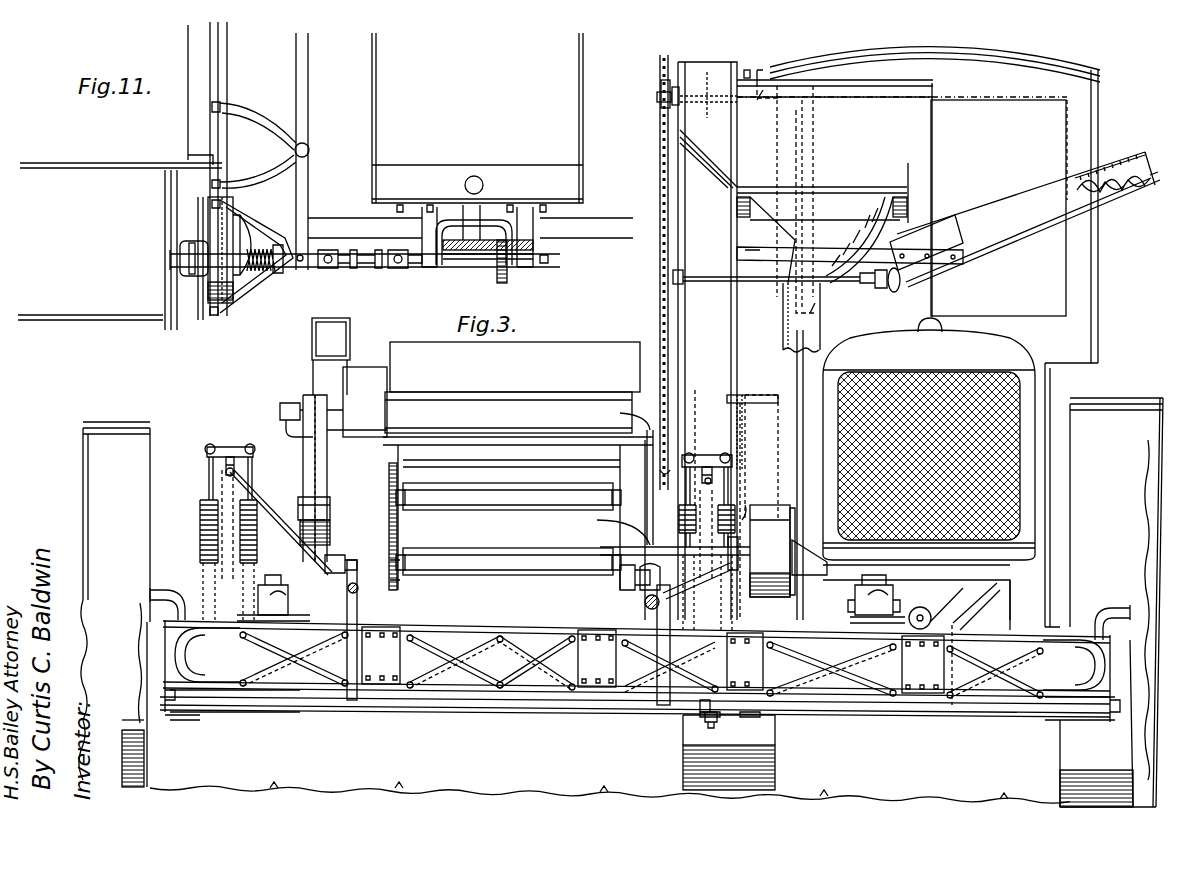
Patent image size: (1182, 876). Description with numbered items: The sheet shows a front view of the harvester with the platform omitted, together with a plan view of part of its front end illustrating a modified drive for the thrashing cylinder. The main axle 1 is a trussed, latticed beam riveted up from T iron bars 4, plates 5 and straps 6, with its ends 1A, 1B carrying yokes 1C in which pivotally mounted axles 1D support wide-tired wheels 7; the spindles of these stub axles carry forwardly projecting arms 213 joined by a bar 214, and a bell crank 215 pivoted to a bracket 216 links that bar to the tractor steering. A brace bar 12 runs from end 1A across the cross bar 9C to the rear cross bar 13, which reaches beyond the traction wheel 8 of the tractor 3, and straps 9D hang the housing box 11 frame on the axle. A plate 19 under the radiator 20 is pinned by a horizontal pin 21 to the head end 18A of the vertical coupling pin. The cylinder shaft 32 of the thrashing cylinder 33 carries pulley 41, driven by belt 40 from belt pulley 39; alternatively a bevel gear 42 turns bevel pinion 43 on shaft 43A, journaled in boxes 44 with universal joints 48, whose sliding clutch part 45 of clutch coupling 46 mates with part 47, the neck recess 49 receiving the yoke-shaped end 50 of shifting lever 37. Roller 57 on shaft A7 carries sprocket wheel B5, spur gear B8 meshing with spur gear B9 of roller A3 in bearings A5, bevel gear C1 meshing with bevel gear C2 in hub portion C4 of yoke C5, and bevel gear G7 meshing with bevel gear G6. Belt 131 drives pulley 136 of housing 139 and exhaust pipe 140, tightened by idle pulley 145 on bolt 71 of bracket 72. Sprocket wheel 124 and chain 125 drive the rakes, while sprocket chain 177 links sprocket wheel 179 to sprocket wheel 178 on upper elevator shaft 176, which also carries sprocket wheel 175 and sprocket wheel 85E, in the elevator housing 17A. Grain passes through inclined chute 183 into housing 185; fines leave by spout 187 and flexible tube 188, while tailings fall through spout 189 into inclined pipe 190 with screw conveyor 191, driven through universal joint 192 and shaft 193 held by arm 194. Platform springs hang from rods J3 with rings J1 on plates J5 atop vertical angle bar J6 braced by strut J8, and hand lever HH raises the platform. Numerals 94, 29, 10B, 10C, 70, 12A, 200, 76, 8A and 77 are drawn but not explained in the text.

In FIG. 11, the upright post 94 is at (222, 60).
In FIG. 11, the shifting lever 37 is at (306, 108).
In FIG. 11, the clutch coupling 46 is at (232, 212).
In FIG. 11, the clutch coupling part 47 is at (215, 221).
In FIG. 11, the thrashing cylinder shaft 32 is at (180, 260).
In FIG. 3, the thrashing cylinder shaft 32 is at (700, 572).
In FIG. 11, the clutch coupling part 45 is at (246, 280).
In FIG. 11, the neck recess 49 is at (302, 274).
In FIG. 11, the yoke-shaped end 50 is at (308, 230).
In FIG. 11, the universal joints 48 is at (330, 270).
In FIG. 11, the boxes 44 is at (525, 266).
In FIG. 11, the bevel gear 42 is at (470, 254).
In FIG. 11, the shaft 43A is at (443, 265).
In FIG. 11, the bevel pinion 43 is at (503, 284).
In FIG. 11, the radiator 20 is at (477, 122).
In FIG. 3, the radiator 20 is at (1032, 475).
In FIG. 11, the main axle 1 is at (608, 232).
In FIG. 3, the main axle 1 is at (520, 712).
In FIG. 3, the sprocket chain 177 is at (660, 165).
In FIG. 3, the sprocket wheel 178 is at (662, 80).
In FIG. 3, the upper elevator shaft 176 is at (657, 95).
In FIG. 3, the vertical elevator housing 17A is at (700, 350).
In FIG. 3, the sprocket wheel 175 is at (707, 72).
In FIG. 3, the sprocket wheel 85E is at (747, 70).
In FIG. 3, the cross bar 13 is at (796, 296).
In FIG. 3, the inclined chute 183 is at (717, 165).
In FIG. 3, the housing 185 is at (850, 128).
In FIG. 3, the spout 187 is at (820, 236).
In FIG. 3, the flexible tube 188 is at (808, 325).
In FIG. 3, the arm 194 is at (680, 297).
In FIG. 3, the shaft 193 is at (765, 275).
In FIG. 3, the universal joint 192 is at (880, 288).
In FIG. 3, the cab 29 is at (995, 80).
In FIG. 3, the spout 189 is at (920, 222).
In FIG. 3, the upwardly inclined pipe 190 is at (1017, 242).
In FIG. 3, the screw conveyor 191 is at (1140, 185).
In FIG. 3, the tractor 3 is at (1055, 380).
In FIG. 3, the traction wheel 8 is at (1116, 602).
In FIG. 3, the wheels 7 is at (1150, 516).
In FIG. 3, the T iron bars 4 is at (445, 688).
In FIG. 3, the brace bar 12 is at (968, 714).
In FIG. 3, the plates 5 is at (653, 660).
In FIG. 3, the straps 6 is at (858, 690).
In FIG. 3, the cross bar 9C is at (555, 700).
In FIG. 3, the straps 9D is at (660, 710).
In FIG. 3, the axle end 1A is at (222, 712).
In FIG. 3, the axle end 1B is at (1070, 708).
In FIG. 3, the yokes 1C is at (1125, 717).
In FIG. 3, the pivotally mounted axles 1D is at (1105, 592).
In FIG. 3, the arms 213 is at (1092, 722).
In FIG. 3, the bar 214 is at (950, 714).
In FIG. 3, the bell crank 215 is at (762, 720).
In FIG. 3, the bracket 216 is at (703, 722).
In FIG. 3, the plate 19 is at (916, 597).
In FIG. 3, the frame member 10B is at (1018, 593).
In FIG. 3, the pulley 41 is at (850, 575).
In FIG. 3, the frame member 10C is at (822, 609).
In FIG. 3, the bearing 70 is at (870, 585).
In FIG. 3, the bolt 71 is at (898, 590).
In FIG. 3, the bracket 72 is at (868, 618).
In FIG. 3, the horizontal pin 21 is at (918, 605).
In FIG. 3, the head end 18A is at (950, 603).
In FIG. 3, the rail section 12A is at (950, 712).
In FIG. 3, the housing box 11 is at (520, 378).
In FIG. 3, the exhaust pipe 140 is at (500, 415).
In FIG. 3, the sprocket wheel 124 is at (620, 413).
In FIG. 3, the chain 125 is at (612, 529).
In FIG. 3, the thrashing cylinder 33 is at (511, 485).
In FIG. 3, the roller 57 is at (530, 565).
In FIG. 3, the bearings A5 is at (612, 558).
In FIG. 3, the roller A3 is at (532, 500).
In FIG. 3, the shaft A7 is at (413, 522).
In FIG. 3, the bevel gear G7 is at (620, 540).
In FIG. 3, the bevel gear G6 is at (620, 585).
In FIG. 3, the spur gear B8 is at (395, 580).
In FIG. 3, the spur gear B9 is at (389, 470).
In FIG. 3, the sprocket wheel B5 is at (332, 525).
In FIG. 3, the idle pulley 145 is at (325, 505).
In FIG. 3, the bevel gear C1 is at (350, 553).
In FIG. 3, the bevel gear C2 is at (348, 584).
In FIG. 3, the hub portion C4 is at (362, 620).
In FIG. 3, the yoke C5 is at (385, 600).
In FIG. 3, the belt 131 is at (303, 450).
In FIG. 3, the head box 200 is at (312, 338).
In FIG. 3, the pulley 136 is at (300, 403).
In FIG. 3, the housing 139 is at (357, 402).
In FIG. 3, the plates J5 is at (703, 445).
In FIG. 3, the ring J1 is at (728, 457).
In FIG. 3, the long rod J3 is at (209, 468).
In FIG. 3, the vertical angle bar J6 is at (735, 607).
In FIG. 3, the spring 76 is at (200, 517).
In FIG. 3, the strut J8 is at (290, 518).
In FIG. 3, the column 8A is at (724, 475).
In FIG. 3, the sprocket wheel 179 is at (672, 445).
In FIG. 3, the hand operating lever HH is at (680, 372).
In FIG. 3, the gear box 77 is at (745, 528).
In FIG. 3, the belt pulley 39 is at (745, 505).
In FIG. 3, the belt 40 is at (768, 505).